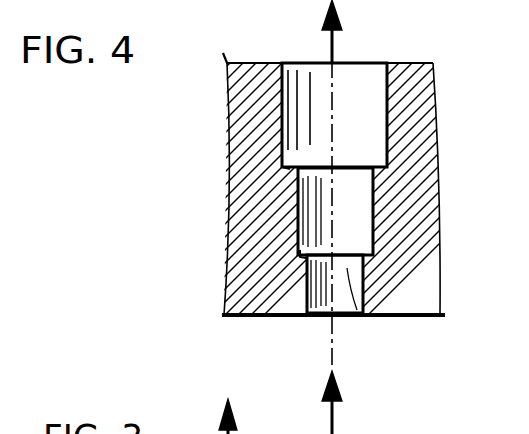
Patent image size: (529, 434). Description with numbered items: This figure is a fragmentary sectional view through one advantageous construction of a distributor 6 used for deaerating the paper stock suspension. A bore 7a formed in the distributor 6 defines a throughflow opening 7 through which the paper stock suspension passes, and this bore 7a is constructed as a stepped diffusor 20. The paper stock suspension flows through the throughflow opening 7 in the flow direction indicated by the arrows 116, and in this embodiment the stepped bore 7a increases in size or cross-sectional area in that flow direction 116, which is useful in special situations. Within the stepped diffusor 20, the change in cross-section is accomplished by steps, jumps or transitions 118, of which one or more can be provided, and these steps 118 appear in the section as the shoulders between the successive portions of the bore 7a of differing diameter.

The distributor 6 is at (417, 137).
The throughflow opening 7 is at (310, 196).
The bore 7a is at (298, 216).
The step 118 is at (282, 164).
The stepped diffusor 20 is at (363, 317).
The flow direction 116 is at (336, 414).